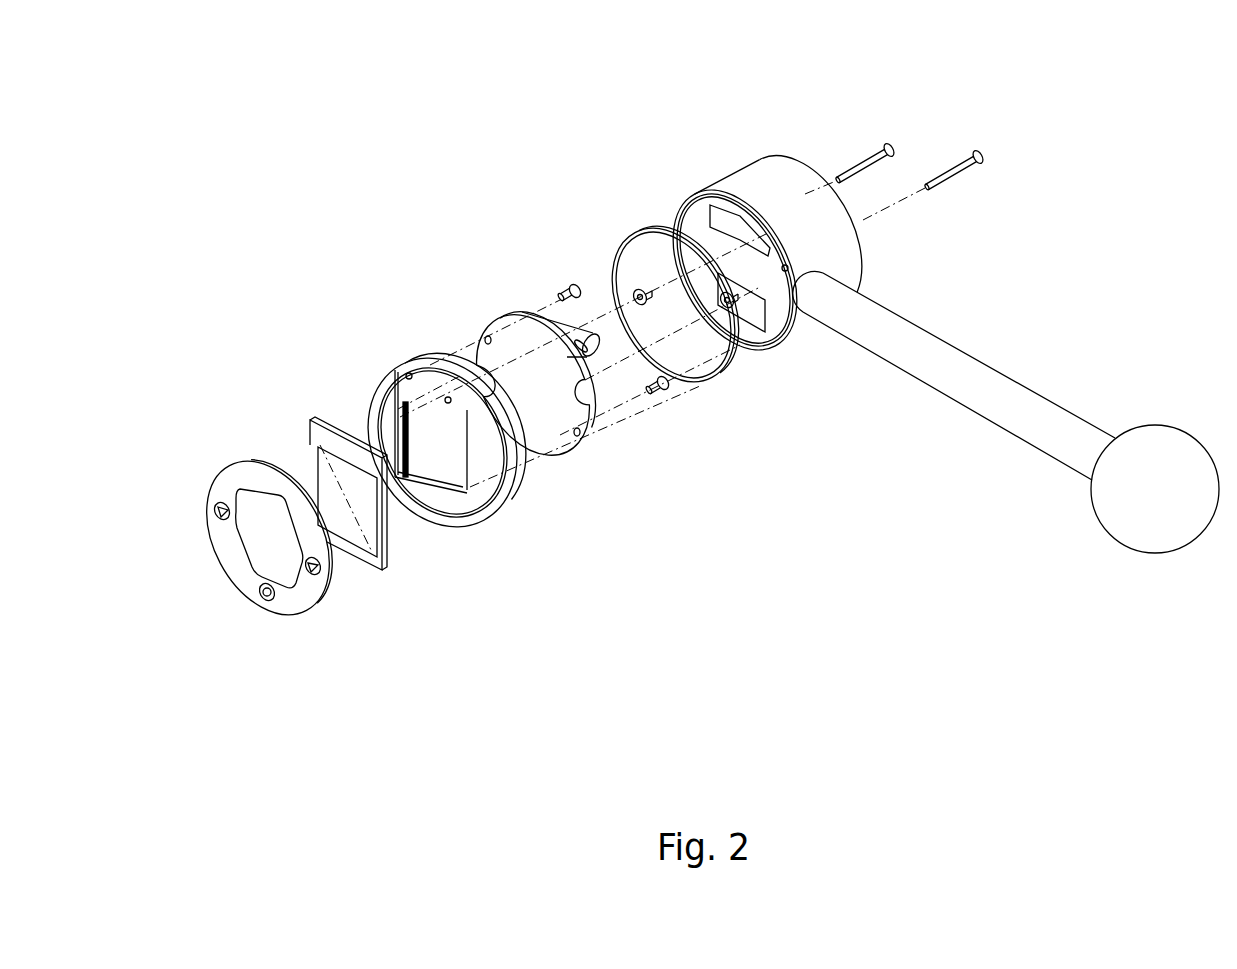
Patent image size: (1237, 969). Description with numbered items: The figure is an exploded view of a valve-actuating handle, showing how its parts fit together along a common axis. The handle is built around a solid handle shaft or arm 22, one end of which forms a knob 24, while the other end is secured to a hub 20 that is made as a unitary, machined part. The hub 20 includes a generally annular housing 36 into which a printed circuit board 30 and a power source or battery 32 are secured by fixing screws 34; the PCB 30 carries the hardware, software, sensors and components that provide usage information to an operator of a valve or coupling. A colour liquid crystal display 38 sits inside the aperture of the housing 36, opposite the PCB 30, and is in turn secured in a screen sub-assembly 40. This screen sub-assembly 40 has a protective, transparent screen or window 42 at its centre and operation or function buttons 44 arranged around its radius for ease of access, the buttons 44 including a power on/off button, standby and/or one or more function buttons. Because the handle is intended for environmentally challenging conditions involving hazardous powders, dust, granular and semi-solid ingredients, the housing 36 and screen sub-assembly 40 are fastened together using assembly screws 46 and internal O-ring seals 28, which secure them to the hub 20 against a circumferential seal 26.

The hub 20 is at (743, 175).
The handle shaft or arm 22 is at (992, 382).
The knob 24 is at (1170, 455).
The circumferential seal 26 is at (640, 230).
The internal O-ring seals 28 is at (727, 308).
The printed circuit board 30 is at (512, 332).
The power source or battery 32 is at (548, 313).
The fixing screws 34 is at (568, 285).
The annular housing 36 is at (430, 360).
The colour liquid crystal display 38 is at (327, 422).
The screen sub-assembly 40 is at (227, 485).
The protective transparent screen or window 42 is at (252, 555).
The operation or function buttons 44 is at (315, 577).
The assembly screws 46 is at (973, 150).